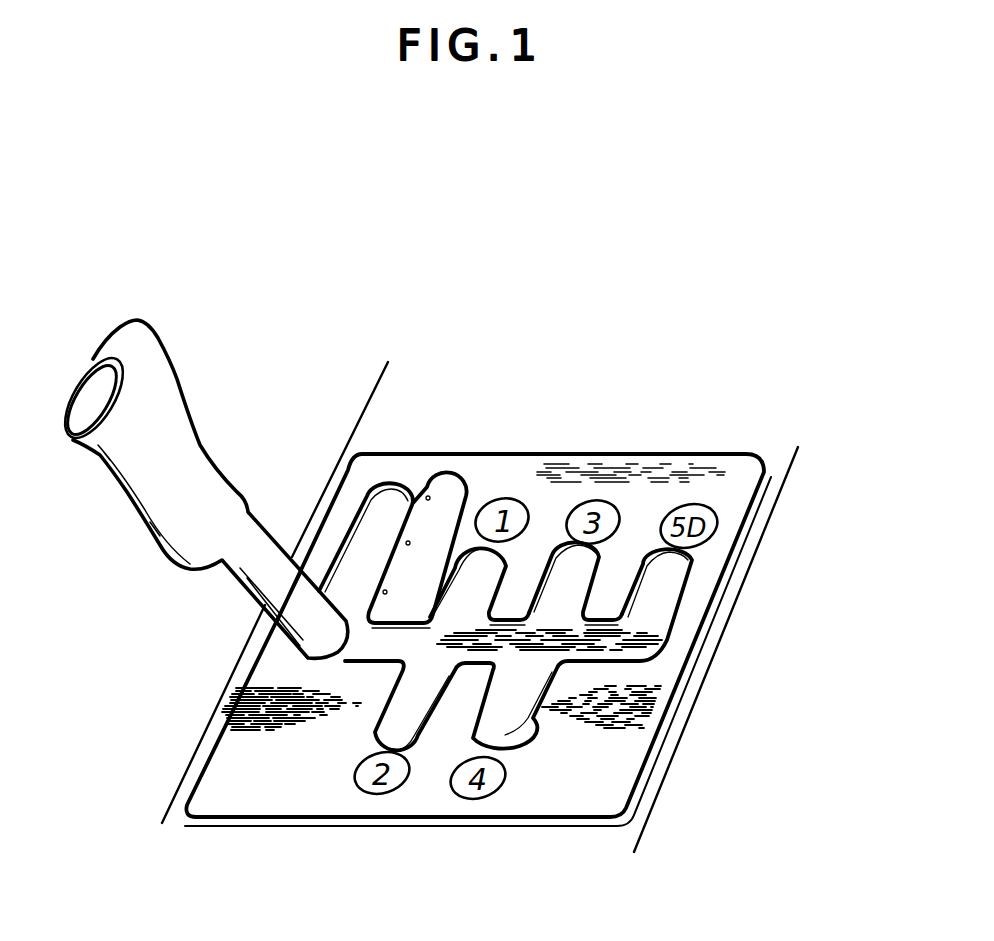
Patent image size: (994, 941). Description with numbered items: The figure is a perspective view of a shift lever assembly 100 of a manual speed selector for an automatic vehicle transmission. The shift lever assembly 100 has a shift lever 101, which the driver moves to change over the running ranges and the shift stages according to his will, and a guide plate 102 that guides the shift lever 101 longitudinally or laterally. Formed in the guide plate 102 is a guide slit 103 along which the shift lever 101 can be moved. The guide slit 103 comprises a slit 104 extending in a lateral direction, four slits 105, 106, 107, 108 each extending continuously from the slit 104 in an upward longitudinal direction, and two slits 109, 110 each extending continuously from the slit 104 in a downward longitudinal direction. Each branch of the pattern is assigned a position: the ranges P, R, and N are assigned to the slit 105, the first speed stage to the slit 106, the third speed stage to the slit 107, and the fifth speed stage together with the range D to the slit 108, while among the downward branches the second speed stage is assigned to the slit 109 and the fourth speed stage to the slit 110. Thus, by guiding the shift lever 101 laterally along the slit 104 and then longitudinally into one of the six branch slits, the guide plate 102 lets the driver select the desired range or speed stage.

The shift lever assembly 100 is at (618, 332).
The shift lever 101 is at (160, 357).
The guide plate 102 is at (683, 480).
The guide slit 103 is at (628, 672).
The slit 104 is at (380, 650).
The slit 105 is at (385, 487).
The slit 106 is at (470, 528).
The slit 107 is at (557, 540).
The slit 108 is at (689, 570).
The slit 109 is at (383, 718).
The slit 110 is at (520, 728).